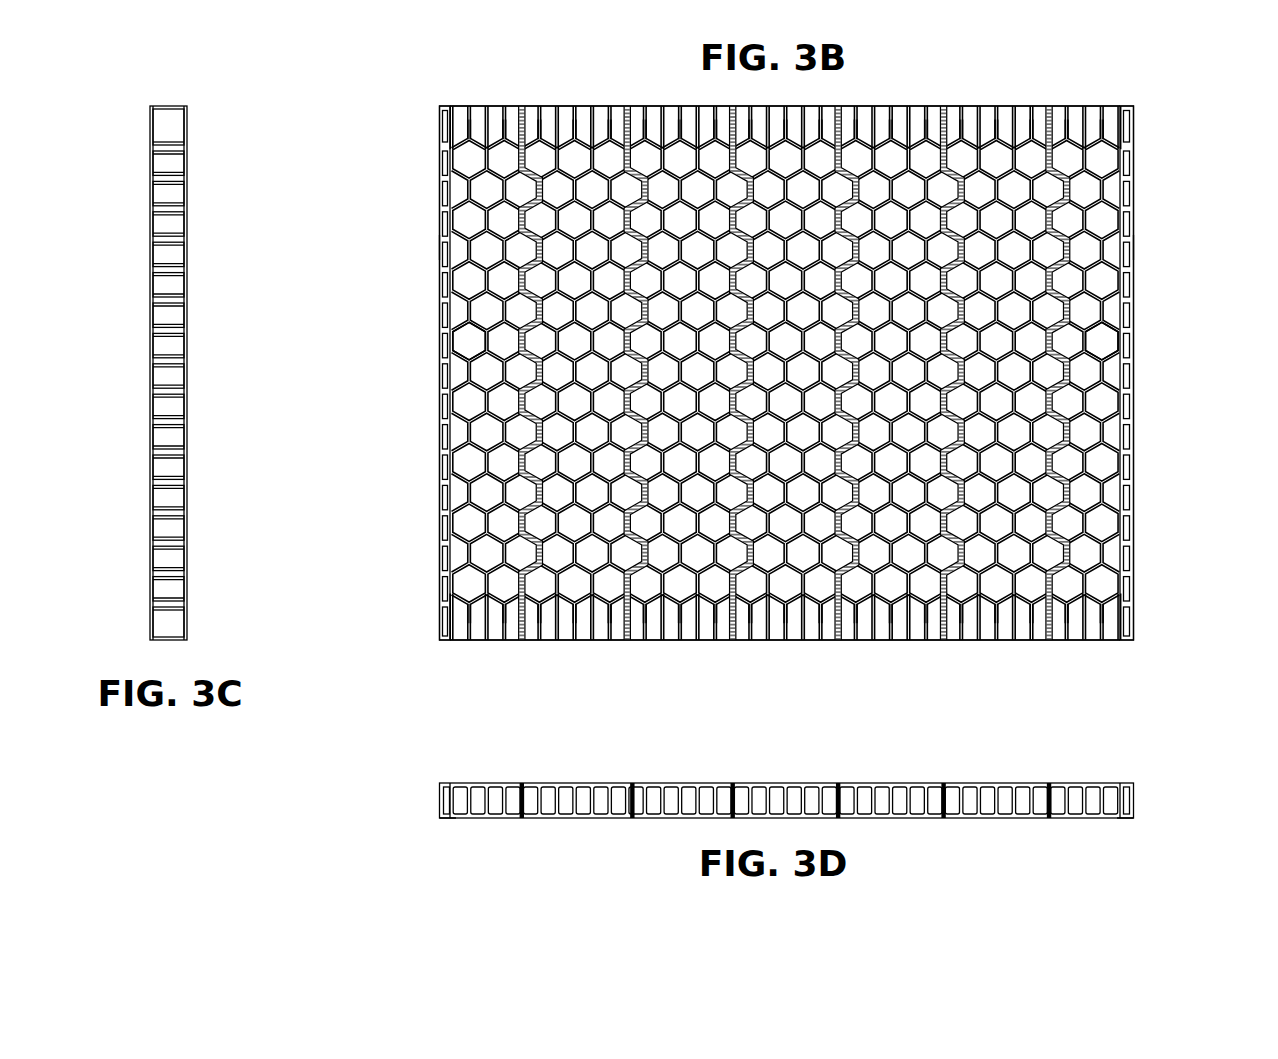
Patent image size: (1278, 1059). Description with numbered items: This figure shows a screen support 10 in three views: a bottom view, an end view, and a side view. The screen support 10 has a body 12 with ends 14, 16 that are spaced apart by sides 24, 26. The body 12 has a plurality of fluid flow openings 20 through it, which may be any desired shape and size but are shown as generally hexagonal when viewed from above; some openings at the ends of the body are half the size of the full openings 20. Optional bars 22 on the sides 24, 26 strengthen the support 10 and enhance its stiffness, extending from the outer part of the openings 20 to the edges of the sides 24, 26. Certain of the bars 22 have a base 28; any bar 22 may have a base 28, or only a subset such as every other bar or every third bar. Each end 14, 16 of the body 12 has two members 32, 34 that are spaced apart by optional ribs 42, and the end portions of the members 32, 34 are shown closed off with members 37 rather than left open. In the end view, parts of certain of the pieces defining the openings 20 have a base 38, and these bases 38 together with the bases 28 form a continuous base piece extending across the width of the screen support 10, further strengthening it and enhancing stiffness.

In FIG. 3B, the screen support 10 is at (536, 102).
In FIG. 3C, the screen support 10 is at (195, 153).
In FIG. 3D, the screen support 10 is at (546, 823).
In FIG. 3B, the body 12 is at (655, 106).
In FIG. 3B, the end 14 is at (440, 150).
In FIG. 3C, the end 14 is at (188, 372).
In FIG. 3D, the end 14 is at (440, 802).
In FIG. 3B, the end 16 is at (1134, 142).
In FIG. 3D, the end 16 is at (1134, 802).
In FIG. 3B, the fluid flow openings 20 is at (487, 400).
In FIG. 3B, the bars 22 is at (556, 625).
In FIG. 3B, the side 24 is at (1008, 106).
In FIG. 3B, the side 26 is at (1003, 642).
In FIG. 3B, the base 28 is at (832, 612).
In FIG. 3D, the base 28 is at (522, 783).
In FIG. 3B, the member 32 is at (440, 249).
In FIG. 3B, the member 34 is at (450, 318).
In FIG. 3D, the members 37 is at (440, 815).
In FIG. 3B, the base 38 is at (522, 521).
In FIG. 3B, the ribs 42 is at (440, 180).